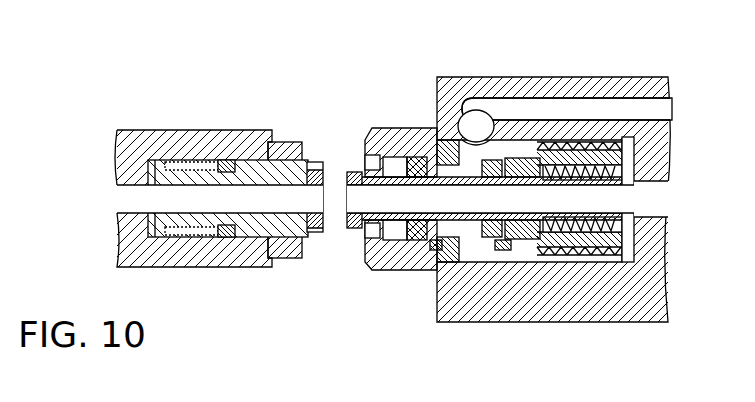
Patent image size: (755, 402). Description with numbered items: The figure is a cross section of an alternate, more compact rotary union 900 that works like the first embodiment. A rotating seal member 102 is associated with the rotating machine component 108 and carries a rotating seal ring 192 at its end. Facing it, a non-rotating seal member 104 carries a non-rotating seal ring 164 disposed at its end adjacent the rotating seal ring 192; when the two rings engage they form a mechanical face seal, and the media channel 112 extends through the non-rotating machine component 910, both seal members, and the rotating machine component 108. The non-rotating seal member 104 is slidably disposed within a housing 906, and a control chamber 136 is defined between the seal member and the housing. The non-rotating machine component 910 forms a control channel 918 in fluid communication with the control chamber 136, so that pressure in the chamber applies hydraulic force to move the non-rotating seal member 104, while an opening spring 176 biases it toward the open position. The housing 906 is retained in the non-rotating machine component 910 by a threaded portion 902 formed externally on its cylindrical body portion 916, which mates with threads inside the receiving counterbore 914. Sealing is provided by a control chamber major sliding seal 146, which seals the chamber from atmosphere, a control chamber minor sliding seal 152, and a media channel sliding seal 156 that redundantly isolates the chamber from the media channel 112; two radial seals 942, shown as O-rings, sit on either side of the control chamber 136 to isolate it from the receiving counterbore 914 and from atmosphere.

The rotary union 900 is at (302, 70).
The rotating seal member 102 is at (292, 150).
The rotating machine component 108 is at (205, 257).
The media channel 112 is at (130, 207).
The rotating seal ring 192 is at (314, 237).
The non-rotating seal ring 164 is at (352, 232).
The housing 906 is at (385, 145).
The control chamber major sliding seal 146 is at (400, 150).
The control chamber 136 is at (457, 170).
The control chamber minor sliding seal 152 is at (507, 160).
The media channel sliding seal 156 is at (535, 150).
The threaded portion 902 is at (582, 132).
The control channel 918 is at (643, 105).
The opening spring 176 is at (634, 140).
The receiving counterbore 914 is at (622, 247).
The radial seals 942 is at (420, 270).
The non-rotating seal member 104 is at (466, 243).
The non-rotating machine component 910 is at (558, 305).
The cylindrical body portion 916 is at (594, 270).